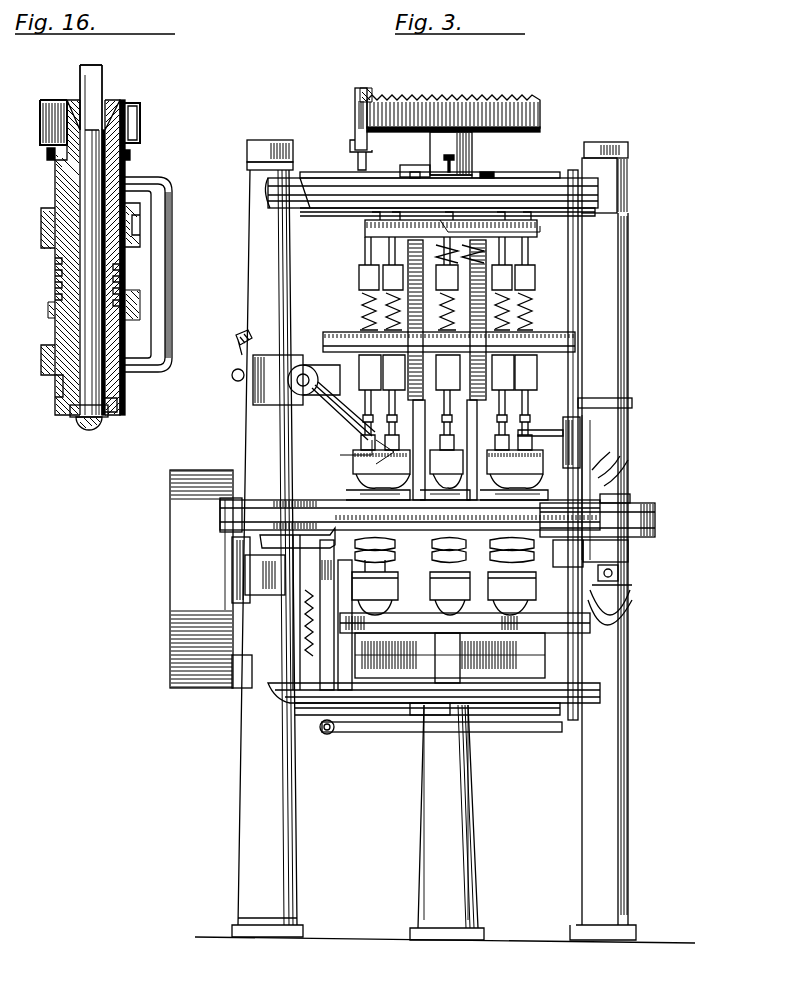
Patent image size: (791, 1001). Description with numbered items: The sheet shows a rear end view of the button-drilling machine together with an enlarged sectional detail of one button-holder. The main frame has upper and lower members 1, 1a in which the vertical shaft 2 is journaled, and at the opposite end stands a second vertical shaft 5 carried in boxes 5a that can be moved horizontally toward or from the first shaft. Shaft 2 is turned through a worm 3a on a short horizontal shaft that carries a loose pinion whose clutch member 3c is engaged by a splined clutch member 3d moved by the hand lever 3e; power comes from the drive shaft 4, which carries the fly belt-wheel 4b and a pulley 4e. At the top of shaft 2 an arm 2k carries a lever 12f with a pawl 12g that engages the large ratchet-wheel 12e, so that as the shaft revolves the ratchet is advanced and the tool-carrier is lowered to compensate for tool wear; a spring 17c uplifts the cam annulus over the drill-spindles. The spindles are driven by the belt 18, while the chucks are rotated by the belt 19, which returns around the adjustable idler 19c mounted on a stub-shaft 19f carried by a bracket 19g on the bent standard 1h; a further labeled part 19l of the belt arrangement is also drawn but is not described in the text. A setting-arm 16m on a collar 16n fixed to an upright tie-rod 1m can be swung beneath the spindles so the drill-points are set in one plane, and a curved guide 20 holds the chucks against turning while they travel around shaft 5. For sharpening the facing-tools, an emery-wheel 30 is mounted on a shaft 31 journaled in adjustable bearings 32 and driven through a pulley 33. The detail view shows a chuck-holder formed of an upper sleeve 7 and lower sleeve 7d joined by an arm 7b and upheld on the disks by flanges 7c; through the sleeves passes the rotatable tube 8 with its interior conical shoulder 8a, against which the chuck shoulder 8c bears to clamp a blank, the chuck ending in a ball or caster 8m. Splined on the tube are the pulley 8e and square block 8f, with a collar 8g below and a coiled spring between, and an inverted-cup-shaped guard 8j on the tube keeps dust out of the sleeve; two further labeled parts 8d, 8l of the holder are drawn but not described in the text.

In FIG. 3, the upper member of the main frame 1 is at (520, 180).
In FIG. 3, the lower member of the main frame 1a is at (418, 716).
In FIG. 3, the standard 1h is at (628, 432).
In FIG. 3, the upright tie-rod 1m is at (600, 248).
In FIG. 3, the vertical shaft 2 is at (465, 135).
In FIG. 3, the arm 2k is at (400, 140).
In FIG. 3, the worm 3a is at (515, 680).
In FIG. 3, the clutch member 3c is at (275, 690).
In FIG. 3, the clutch member 3d is at (325, 734).
In FIG. 3, the lever 3e is at (332, 736).
In FIG. 3, the shaft 4 is at (240, 590).
In FIG. 3, the fly belt-wheel 4b is at (232, 550).
In FIG. 3, the pulley 4e is at (238, 688).
In FIG. 3, the second vertical shaft 5 is at (475, 786).
In FIG. 3, the boxes 5a is at (512, 195).
In FIG. 16, the upper sleeve 7 is at (55, 176).
In FIG. 16, the arm 7b is at (172, 220).
In FIG. 16, the circumferential flange 7c is at (132, 156).
In FIG. 16, the lower sleeve 7d is at (45, 348).
In FIG. 16, the rotatable tube 8 is at (80, 325).
In FIG. 16, the interior conical shoulder 8a is at (78, 95).
In FIG. 16, the conical shoulder 8c is at (106, 100).
In FIG. 16, the rod thread 8d is at (125, 282).
In FIG. 16, the pulley 8e is at (48, 230).
In FIG. 16, the square block 8f is at (55, 262).
In FIG. 16, the collar 8g is at (48, 308).
In FIG. 16, the inverted-cup-shaped guard 8j is at (141, 118).
In FIG. 16, the rod tip 8l is at (80, 412).
In FIG. 16, the ball or caster 8m is at (102, 422).
In FIG. 3, the ratchet-wheel 12e is at (505, 100).
In FIG. 3, the lever 12f is at (355, 120).
In FIG. 3, the pawl 12g is at (372, 92).
In FIG. 3, the setting-arm 16m is at (558, 425).
In FIG. 3, the collar 16n is at (545, 436).
In FIG. 3, the spring 17c is at (444, 162).
In FIG. 3, the belt 18 is at (325, 335).
In FIG. 3, the belt 19 is at (335, 505).
In FIG. 3, the adjustable idler 19c is at (645, 503).
In FIG. 3, the stub-shaft 19f is at (628, 480).
In FIG. 3, the bracket 19g is at (620, 574).
In FIG. 3, the bar end 19l is at (222, 502).
In FIG. 3, the curved guide 20 is at (335, 528).
In FIG. 3, the emery-wheel 30 is at (345, 456).
In FIG. 3, the shaft 31 is at (340, 412).
In FIG. 3, the adjustable bearings 32 is at (253, 390).
In FIG. 3, the pulley 33 is at (238, 336).